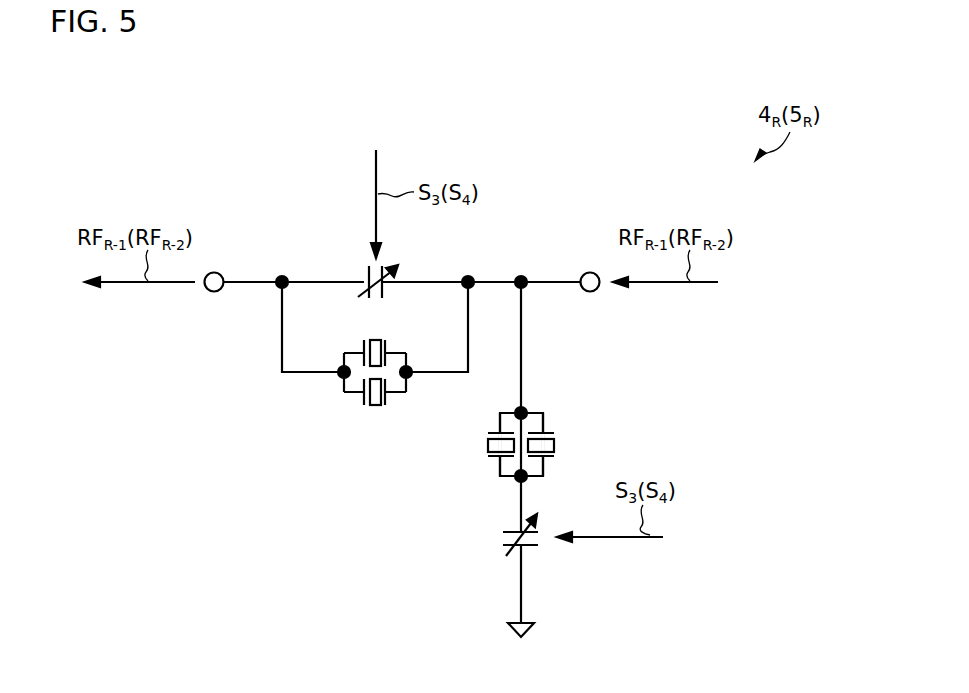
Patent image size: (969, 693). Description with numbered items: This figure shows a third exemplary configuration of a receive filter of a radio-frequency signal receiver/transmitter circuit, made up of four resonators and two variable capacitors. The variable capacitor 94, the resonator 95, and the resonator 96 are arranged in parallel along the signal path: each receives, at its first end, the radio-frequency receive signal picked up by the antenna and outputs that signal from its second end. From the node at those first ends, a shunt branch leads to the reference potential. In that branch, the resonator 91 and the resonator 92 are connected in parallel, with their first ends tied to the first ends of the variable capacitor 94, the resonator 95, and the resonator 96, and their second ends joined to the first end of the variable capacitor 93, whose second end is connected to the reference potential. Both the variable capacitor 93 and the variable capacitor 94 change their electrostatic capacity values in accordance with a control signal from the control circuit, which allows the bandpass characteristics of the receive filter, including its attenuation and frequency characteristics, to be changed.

The resonator 91 is at (560, 444).
The resonator 92 is at (485, 443).
The variable capacitor 93 is at (535, 547).
The variable capacitor 94 is at (365, 276).
The resonator 95 is at (373, 338).
The resonator 96 is at (372, 407).